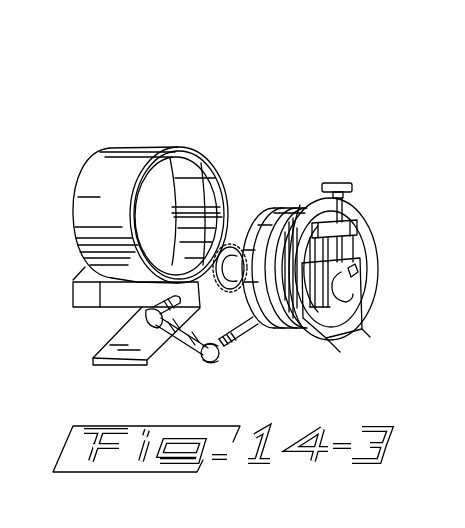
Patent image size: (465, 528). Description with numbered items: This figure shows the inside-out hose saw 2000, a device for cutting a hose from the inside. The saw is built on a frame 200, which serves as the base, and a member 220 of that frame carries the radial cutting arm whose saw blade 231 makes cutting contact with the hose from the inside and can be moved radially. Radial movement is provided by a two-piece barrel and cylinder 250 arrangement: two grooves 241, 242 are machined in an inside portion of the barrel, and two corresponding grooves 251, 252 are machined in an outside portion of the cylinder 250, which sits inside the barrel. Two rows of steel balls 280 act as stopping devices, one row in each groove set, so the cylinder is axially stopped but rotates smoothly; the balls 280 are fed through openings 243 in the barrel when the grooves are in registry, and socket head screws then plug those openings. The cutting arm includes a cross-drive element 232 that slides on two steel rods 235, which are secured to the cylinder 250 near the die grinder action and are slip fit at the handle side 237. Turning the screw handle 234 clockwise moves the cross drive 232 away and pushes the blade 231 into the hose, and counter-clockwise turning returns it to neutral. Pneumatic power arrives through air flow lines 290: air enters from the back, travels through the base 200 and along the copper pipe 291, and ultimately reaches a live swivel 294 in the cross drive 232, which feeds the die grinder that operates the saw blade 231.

The inside-out hose saw 2000 is at (178, 82).
The openings 243 is at (186, 148).
The groove 242 is at (240, 186).
The groove 241 is at (224, 188).
The groove 251 is at (272, 218).
The groove 252 is at (298, 198).
The cylinder 250 is at (295, 205).
The screw handle 234 is at (354, 189).
The handle side 237 is at (358, 234).
The member 220 is at (365, 266).
The live swivel 294 is at (370, 312).
The steel rods 235 is at (310, 272).
The cross-drive element 232 is at (366, 332).
The saw blade 231 is at (251, 325).
The frame 200 is at (118, 296).
The copper pipe 291 is at (200, 351).
The air flow lines 290 is at (192, 360).
The steel balls 280 is at (193, 371).